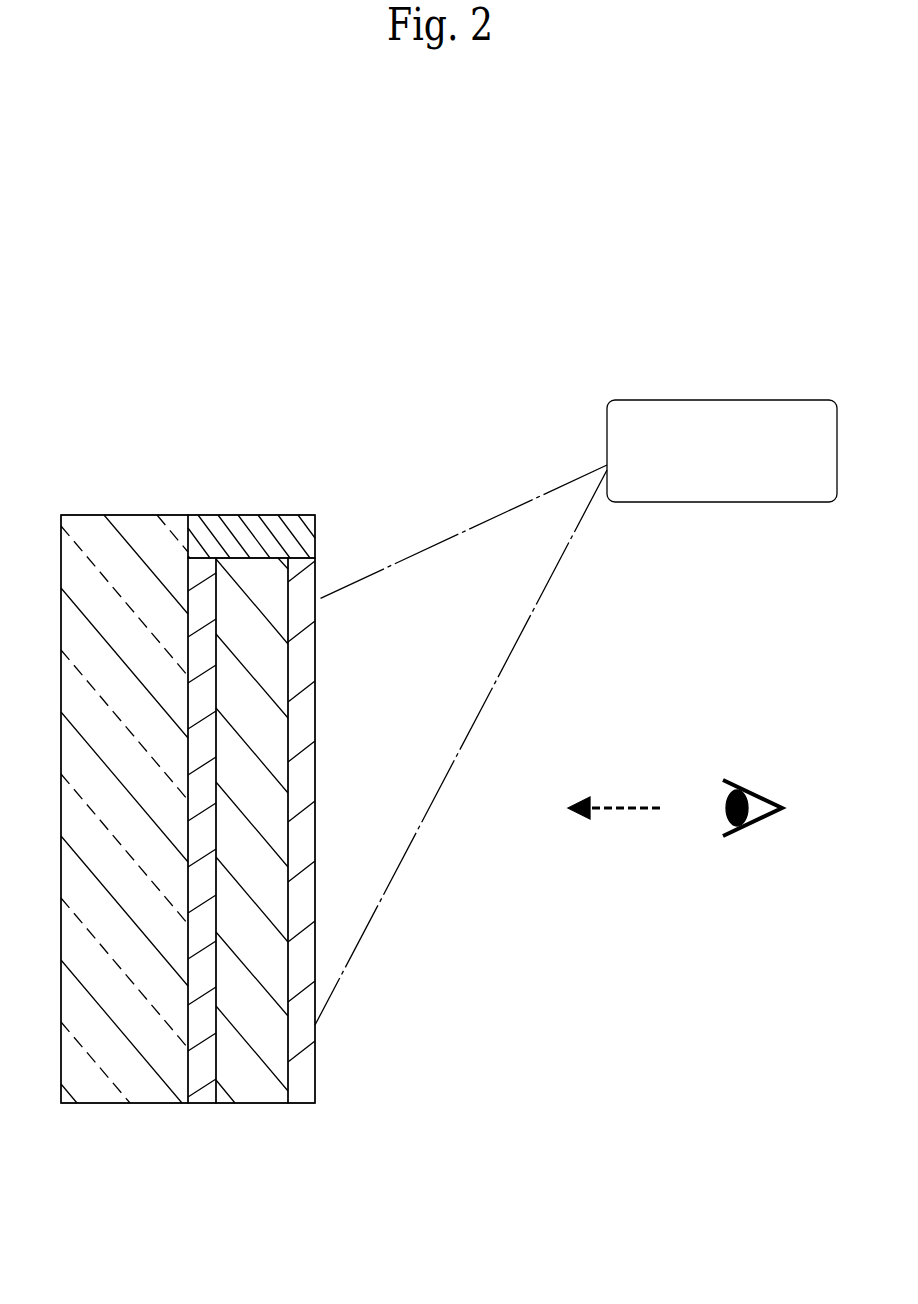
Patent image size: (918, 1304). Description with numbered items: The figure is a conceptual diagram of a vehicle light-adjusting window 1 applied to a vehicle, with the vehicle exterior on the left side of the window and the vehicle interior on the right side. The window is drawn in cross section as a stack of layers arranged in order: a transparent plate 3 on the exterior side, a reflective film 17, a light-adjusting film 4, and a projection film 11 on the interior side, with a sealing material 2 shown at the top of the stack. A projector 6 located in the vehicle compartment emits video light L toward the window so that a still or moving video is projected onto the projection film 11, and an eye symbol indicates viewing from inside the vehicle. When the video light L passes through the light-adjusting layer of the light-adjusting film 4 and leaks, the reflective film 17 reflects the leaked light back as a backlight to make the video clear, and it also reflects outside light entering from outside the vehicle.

The vehicle light-adjusting window 1 is at (92, 1185).
The sealing material 2 is at (255, 528).
The transparent plate 3 is at (112, 1098).
The reflective film 17 is at (200, 1098).
The light-adjusting film 4 is at (250, 1098).
The projection film 11 is at (302, 1098).
The projector 6 is at (768, 418).
The video light L is at (412, 555).